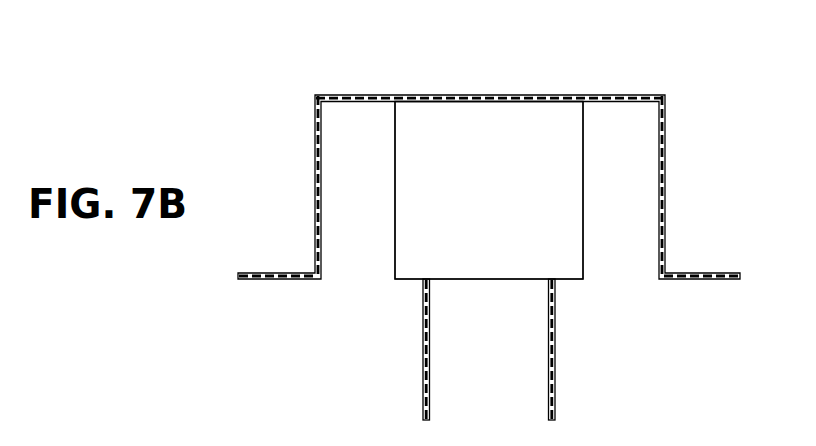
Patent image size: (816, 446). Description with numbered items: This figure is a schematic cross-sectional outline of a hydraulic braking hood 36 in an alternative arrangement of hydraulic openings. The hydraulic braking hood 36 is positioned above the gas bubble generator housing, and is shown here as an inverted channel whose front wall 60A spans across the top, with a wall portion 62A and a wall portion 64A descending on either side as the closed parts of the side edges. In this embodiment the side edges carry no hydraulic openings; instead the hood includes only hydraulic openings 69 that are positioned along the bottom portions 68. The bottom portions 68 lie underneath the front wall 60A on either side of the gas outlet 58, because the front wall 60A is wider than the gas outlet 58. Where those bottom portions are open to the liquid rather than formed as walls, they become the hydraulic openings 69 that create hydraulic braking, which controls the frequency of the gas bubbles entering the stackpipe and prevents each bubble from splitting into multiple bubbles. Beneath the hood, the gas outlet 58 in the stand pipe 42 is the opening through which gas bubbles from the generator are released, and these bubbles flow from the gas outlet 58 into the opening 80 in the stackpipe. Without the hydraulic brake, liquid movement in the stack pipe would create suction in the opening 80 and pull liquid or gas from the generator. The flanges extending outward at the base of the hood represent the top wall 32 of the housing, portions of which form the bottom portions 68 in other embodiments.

The top wall 32 is at (273, 273).
The hydraulic braking hood 36 is at (698, 84).
The stand pipe 42 is at (515, 380).
The gas outlet 58 is at (488, 279).
The front wall 60A is at (588, 94).
The wall portion 62A is at (315, 127).
The wall portion 64A is at (665, 127).
The bottom portions 68 is at (334, 293).
The hydraulic openings 69 is at (358, 283).
The opening 80 is at (481, 153).